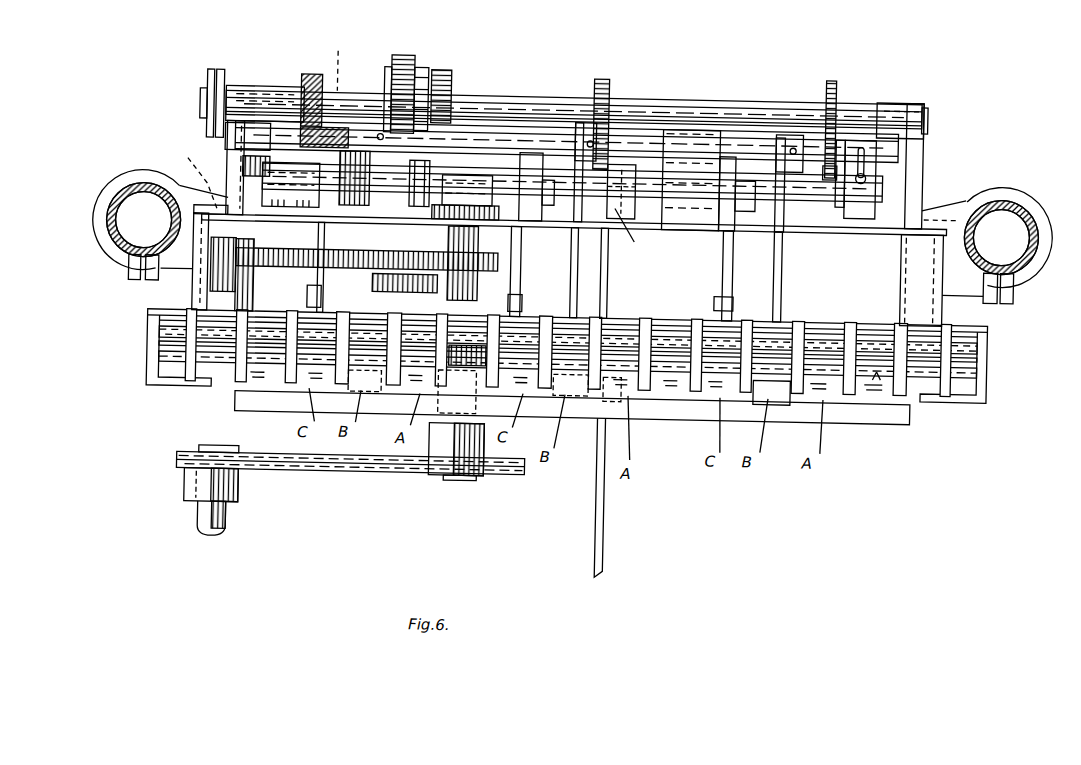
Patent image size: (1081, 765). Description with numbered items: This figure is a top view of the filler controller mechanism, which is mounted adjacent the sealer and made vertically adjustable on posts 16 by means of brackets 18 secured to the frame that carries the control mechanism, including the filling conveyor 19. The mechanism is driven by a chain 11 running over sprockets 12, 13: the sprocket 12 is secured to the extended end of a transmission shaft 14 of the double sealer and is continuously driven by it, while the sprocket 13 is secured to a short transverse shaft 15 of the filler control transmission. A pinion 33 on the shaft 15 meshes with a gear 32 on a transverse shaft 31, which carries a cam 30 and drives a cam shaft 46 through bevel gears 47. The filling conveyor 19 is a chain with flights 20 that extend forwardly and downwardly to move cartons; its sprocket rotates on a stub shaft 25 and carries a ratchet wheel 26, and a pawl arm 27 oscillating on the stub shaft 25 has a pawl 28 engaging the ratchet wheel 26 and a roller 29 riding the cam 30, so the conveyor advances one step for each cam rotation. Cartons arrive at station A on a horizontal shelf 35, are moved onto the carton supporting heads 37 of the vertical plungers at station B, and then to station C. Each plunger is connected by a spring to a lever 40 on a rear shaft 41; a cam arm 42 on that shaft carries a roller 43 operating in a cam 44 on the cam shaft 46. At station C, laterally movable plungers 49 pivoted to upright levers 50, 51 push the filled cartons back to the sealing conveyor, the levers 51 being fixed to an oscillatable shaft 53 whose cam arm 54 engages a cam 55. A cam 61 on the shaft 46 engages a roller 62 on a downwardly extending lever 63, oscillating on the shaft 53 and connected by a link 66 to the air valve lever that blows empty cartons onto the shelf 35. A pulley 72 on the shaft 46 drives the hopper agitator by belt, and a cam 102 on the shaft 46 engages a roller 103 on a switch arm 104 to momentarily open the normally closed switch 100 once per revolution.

The chain 11 is at (348, 472).
The sprocket 12 is at (228, 452).
The sprocket 13 is at (514, 460).
The transmission shaft 14 is at (212, 519).
The transverse shaft 15 is at (455, 425).
The posts 16 is at (130, 186).
The brackets 18 is at (110, 188).
The filling conveyor 19 is at (878, 366).
The flights 20 is at (850, 398).
The stub shaft 25 is at (560, 186).
The ratchet wheel 26 is at (163, 300).
The pawl arm 27 is at (197, 302).
The pawl 28 is at (237, 307).
The roller 29 is at (240, 280).
The cam 30 is at (400, 291).
The transverse shaft 31 is at (350, 209).
The gear 32 is at (388, 256).
The pinion 33 is at (500, 260).
The horizontal shelf 35 is at (670, 394).
The carton supporting heads 37 is at (372, 397).
The lever 40 is at (355, 300).
The shaft 41 is at (497, 140).
The cam arm 42 is at (381, 82).
The roller 43 is at (385, 56).
The cam 44 is at (403, 58).
The shaft 46 is at (652, 108).
The bevel gears 47 is at (313, 85).
The laterally movable plungers 49 is at (316, 296).
The upright levers 50 is at (318, 297).
The upright levers 51 is at (338, 182).
The oscillatable shaft 53 is at (628, 196).
The cam arm 54 is at (420, 72).
The cam 55 is at (437, 112).
The cam 61 is at (604, 84).
The roller 62 is at (578, 196).
The lever 63 is at (630, 235).
The link 66 is at (600, 525).
The pulley 72 is at (203, 82).
The switch 100 is at (858, 195).
The cam 102 is at (832, 95).
The roller 103 is at (824, 174).
The switch arm 104 is at (842, 140).